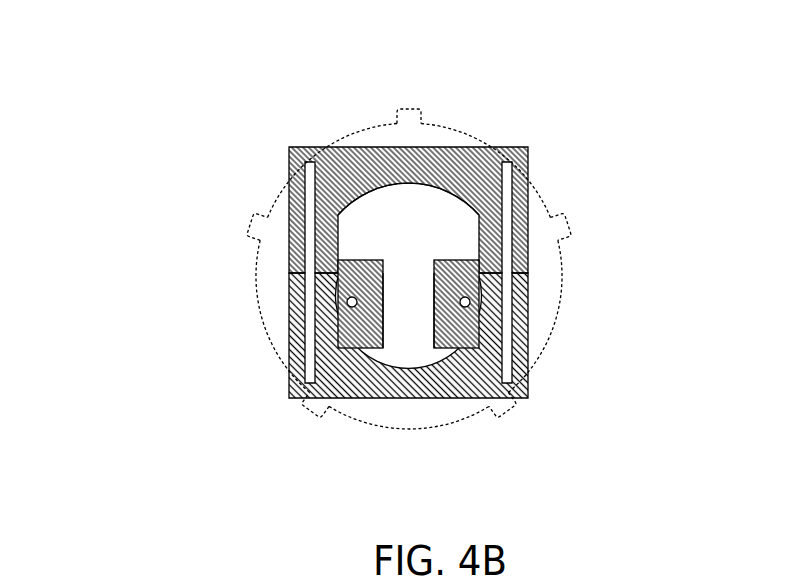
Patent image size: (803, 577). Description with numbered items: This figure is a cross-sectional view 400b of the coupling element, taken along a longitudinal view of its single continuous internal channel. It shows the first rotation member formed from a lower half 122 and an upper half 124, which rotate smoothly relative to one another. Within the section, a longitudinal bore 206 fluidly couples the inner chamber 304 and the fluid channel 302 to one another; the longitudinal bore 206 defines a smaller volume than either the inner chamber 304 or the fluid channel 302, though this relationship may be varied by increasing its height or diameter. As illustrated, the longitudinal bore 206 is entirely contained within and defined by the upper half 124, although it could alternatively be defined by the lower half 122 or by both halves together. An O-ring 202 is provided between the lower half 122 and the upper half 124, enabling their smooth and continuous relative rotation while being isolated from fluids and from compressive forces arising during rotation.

The cross-sectional view 400b is at (80, 87).
The lower half 122 is at (300, 403).
The upper half 124 is at (332, 145).
The fluid channel 302 is at (427, 352).
The inner chamber 304 is at (445, 222).
The longitudinal bore 206 is at (383, 302).
The O-ring 202 is at (460, 306).